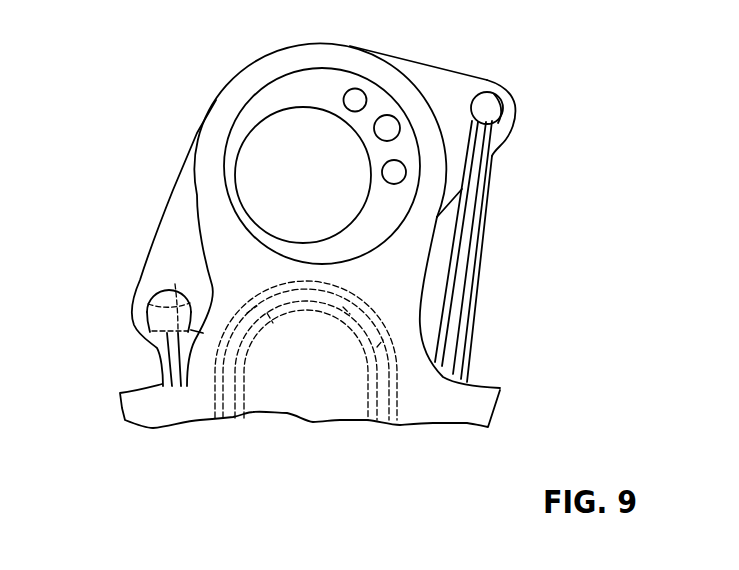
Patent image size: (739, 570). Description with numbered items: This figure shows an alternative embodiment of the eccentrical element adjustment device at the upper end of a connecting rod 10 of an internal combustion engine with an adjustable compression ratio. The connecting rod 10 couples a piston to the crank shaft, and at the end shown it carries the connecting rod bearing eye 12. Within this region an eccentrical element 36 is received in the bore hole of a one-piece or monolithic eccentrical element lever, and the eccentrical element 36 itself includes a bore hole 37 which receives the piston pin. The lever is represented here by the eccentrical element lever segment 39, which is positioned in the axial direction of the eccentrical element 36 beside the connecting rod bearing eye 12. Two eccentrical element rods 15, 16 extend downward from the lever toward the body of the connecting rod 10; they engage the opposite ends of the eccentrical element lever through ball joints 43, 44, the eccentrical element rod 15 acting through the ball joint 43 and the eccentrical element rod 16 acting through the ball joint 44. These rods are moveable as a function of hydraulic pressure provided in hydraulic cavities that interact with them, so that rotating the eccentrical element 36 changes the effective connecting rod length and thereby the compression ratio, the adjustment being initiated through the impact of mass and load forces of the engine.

The connecting rod 10 is at (293, 398).
The connecting rod bearing eye 12 is at (217, 118).
The eccentrical element rod 15 is at (173, 357).
The eccentrical element rod 16 is at (466, 248).
The eccentrical element 36 is at (315, 83).
The bore hole 37 is at (276, 143).
The eccentrical element lever segment 39 is at (450, 90).
The ball joint 43 is at (155, 308).
The ball joint 44 is at (505, 112).